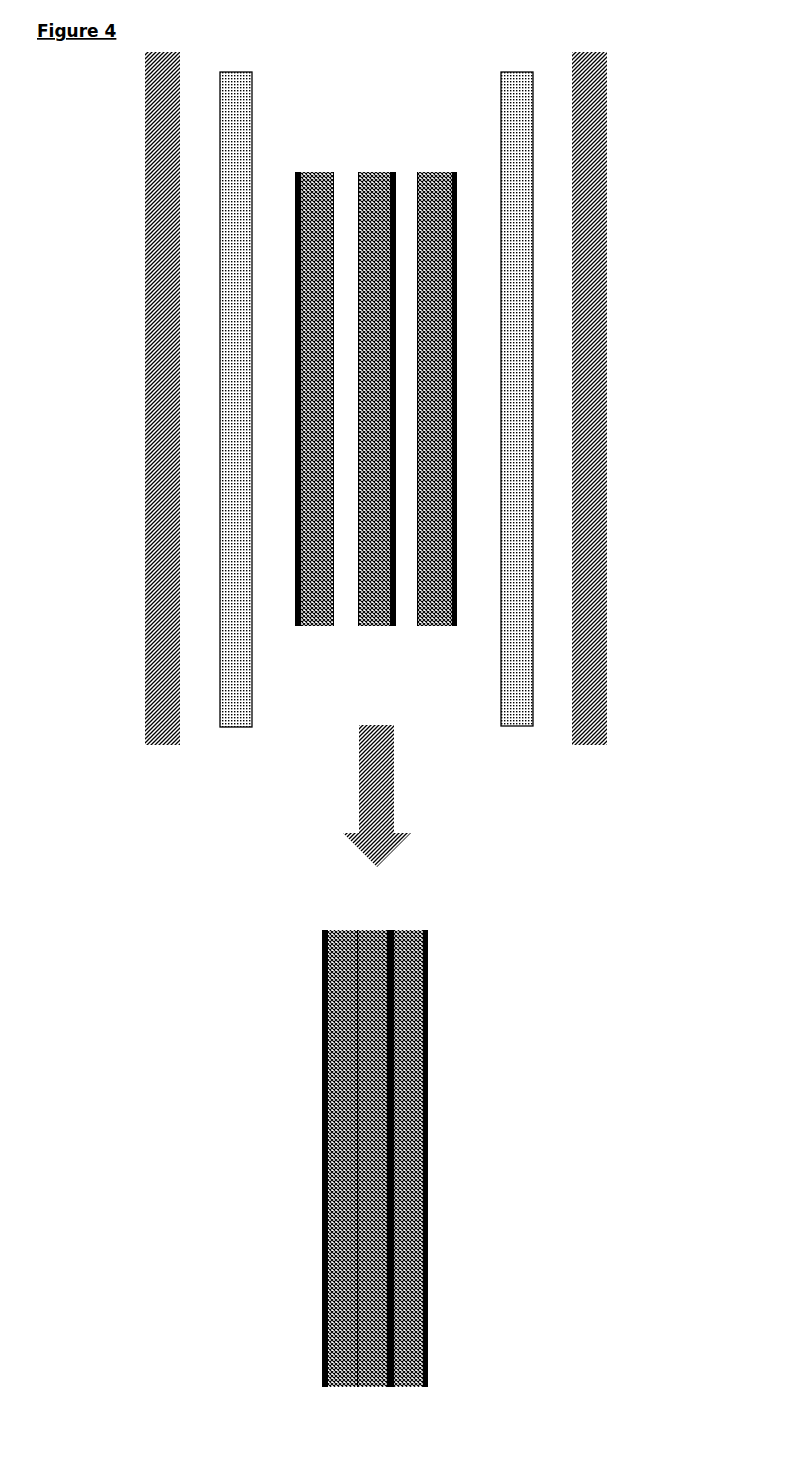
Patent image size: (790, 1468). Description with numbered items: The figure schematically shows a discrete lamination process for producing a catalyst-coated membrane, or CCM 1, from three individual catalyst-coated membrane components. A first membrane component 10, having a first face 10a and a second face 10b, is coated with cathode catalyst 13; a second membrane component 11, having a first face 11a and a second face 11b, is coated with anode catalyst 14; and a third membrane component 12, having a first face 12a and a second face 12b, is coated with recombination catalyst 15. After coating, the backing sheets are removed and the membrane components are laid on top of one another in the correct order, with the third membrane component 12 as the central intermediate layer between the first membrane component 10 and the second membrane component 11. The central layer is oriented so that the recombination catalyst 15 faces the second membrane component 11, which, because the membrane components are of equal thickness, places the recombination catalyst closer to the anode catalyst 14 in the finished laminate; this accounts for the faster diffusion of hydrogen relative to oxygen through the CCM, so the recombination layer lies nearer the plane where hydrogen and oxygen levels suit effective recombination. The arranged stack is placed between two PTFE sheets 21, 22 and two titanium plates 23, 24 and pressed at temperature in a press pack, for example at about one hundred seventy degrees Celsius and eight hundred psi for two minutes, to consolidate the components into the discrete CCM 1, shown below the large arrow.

The CCM 1 is at (506, 1168).
The first membrane component 10 is at (310, 585).
The first face of first membrane component 10a is at (288, 600).
The second face of first membrane component 10b is at (334, 600).
The second membrane component 11 is at (432, 585).
The first face of second membrane component 11a is at (461, 601).
The second face of second membrane component 11b is at (418, 601).
The third membrane component 12 is at (375, 209).
The first face of third membrane component 12a is at (398, 208).
The second face of third membrane component 12b is at (355, 187).
The cathode catalyst 13 is at (292, 209).
The anode catalyst 14 is at (459, 266).
The recombination catalyst 15 is at (391, 421).
The PTFE sheet 21 is at (232, 692).
The PTFE sheet 22 is at (520, 684).
The titanium plate 23 is at (146, 630).
The titanium plate 24 is at (610, 592).